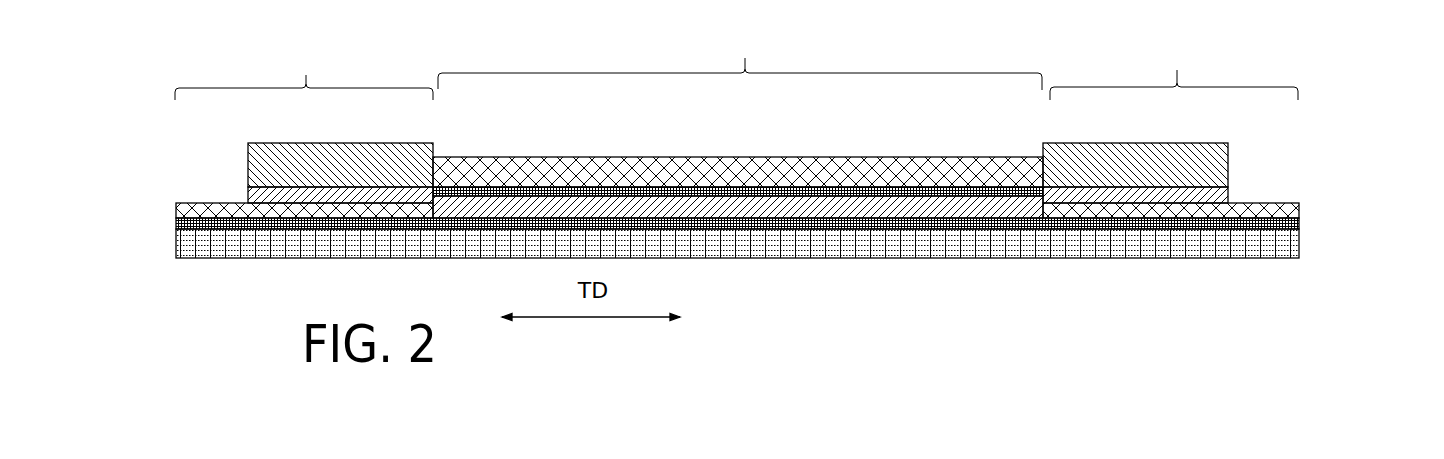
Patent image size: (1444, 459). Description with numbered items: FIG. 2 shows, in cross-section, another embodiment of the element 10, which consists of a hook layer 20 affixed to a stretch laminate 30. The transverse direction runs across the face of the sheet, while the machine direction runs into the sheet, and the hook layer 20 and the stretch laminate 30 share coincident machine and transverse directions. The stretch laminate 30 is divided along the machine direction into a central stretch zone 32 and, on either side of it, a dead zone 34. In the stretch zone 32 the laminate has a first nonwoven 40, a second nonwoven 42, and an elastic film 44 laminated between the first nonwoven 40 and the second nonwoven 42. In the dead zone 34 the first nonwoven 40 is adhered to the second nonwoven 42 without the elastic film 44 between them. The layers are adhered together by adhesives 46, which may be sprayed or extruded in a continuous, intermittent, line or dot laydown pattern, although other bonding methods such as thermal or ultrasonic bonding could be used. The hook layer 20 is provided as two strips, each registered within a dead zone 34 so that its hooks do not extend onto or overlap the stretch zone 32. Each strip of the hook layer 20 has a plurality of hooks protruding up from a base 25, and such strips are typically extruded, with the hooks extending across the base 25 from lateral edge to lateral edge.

The element 10 is at (755, 187).
The hook layer 20 is at (305, 163).
The base 25 is at (433, 196).
The stretch laminate 30 is at (772, 150).
The stretch zone 32 is at (740, 58).
The dead zone 34 is at (736, 68).
The first nonwoven 40 is at (215, 207).
The second nonwoven 42 is at (267, 257).
The elastic film 44 is at (917, 210).
The adhesives 46 is at (200, 227).